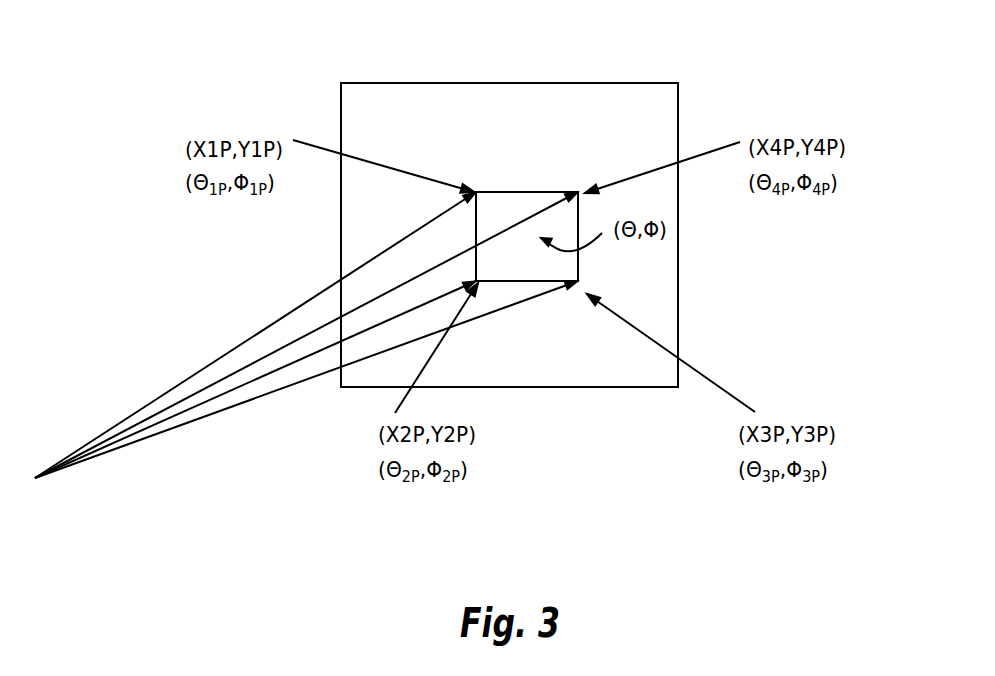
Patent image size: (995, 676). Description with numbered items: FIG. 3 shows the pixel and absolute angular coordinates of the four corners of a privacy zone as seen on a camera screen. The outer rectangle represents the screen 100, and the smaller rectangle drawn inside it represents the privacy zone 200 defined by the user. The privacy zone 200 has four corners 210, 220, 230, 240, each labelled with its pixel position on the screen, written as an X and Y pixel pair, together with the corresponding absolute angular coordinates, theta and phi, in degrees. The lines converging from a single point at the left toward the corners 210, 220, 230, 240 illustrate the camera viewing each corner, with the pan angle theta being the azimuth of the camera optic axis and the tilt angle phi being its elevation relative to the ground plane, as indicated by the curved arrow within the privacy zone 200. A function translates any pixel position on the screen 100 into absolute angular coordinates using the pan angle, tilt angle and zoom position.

The display screen 100 is at (626, 83).
The target region 200 is at (540, 191).
The first corner point 210 is at (270, 320).
The second corner point 220 is at (278, 378).
The third corner point 230 is at (329, 374).
The fourth corner point 240 is at (322, 319).